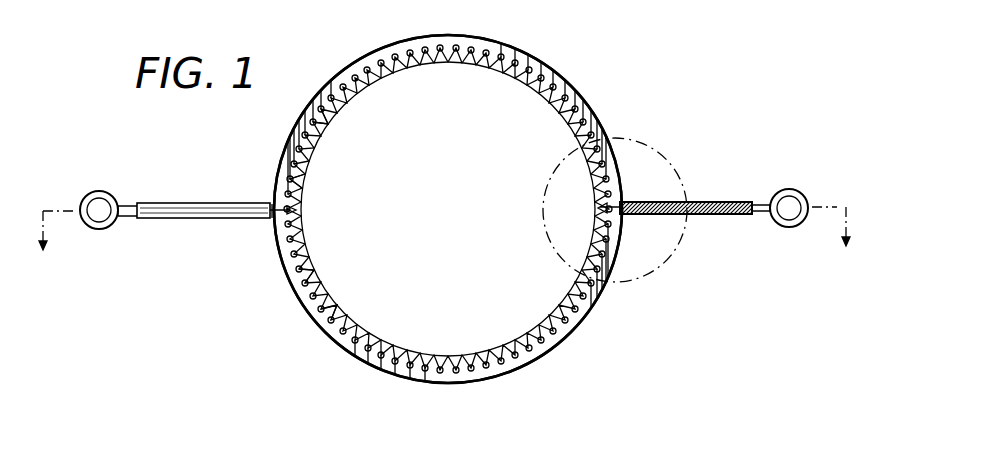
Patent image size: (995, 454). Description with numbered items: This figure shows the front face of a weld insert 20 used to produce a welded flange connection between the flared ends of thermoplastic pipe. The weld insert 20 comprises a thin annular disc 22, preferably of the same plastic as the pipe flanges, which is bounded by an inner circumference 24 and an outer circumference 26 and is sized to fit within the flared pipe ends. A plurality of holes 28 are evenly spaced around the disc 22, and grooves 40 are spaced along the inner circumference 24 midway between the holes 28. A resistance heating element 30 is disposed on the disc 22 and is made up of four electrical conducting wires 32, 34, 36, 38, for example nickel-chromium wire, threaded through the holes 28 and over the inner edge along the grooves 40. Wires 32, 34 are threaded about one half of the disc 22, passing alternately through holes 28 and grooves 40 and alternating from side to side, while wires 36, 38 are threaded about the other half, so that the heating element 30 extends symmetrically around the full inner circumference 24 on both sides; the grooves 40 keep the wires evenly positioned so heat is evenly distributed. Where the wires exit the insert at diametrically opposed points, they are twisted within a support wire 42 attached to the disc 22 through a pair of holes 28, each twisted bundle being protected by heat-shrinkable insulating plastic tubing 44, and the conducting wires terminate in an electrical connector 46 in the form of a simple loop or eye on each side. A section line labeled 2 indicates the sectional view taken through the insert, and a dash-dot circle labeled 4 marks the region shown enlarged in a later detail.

The section line 2- 2 is at (444, 245).
The detail area of FIG. 4 is at (650, 150).
The weld insert 20 is at (581, 67).
The annular disc 22 is at (520, 362).
The inner circumference 24 is at (448, 355).
The outer circumference 26 is at (378, 370).
The holes 28 is at (572, 313).
The resistance heating element 30 is at (383, 78).
The electrical conducting wire 32 is at (313, 280).
The electrical conducting wire 34 is at (337, 315).
The electrical conducting wire 36 is at (330, 117).
The electrical conducting wire 38 is at (300, 184).
The grooves 40 is at (556, 108).
The support wire 42 is at (266, 233).
The insulating plastic tubing 44 is at (240, 203).
The electrical connector 46 is at (107, 228).